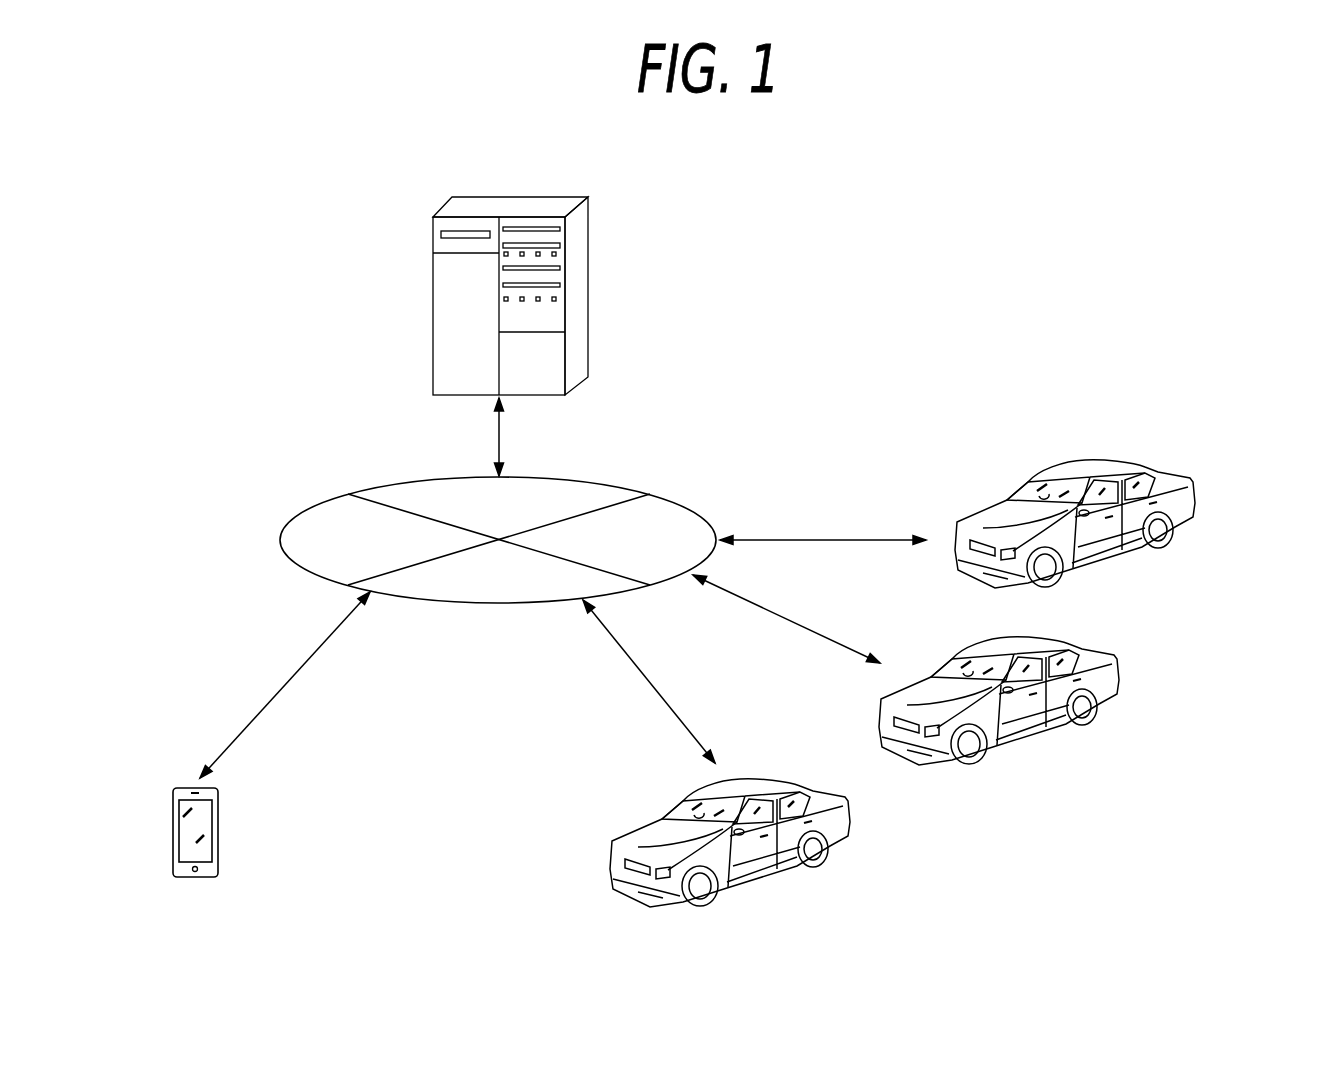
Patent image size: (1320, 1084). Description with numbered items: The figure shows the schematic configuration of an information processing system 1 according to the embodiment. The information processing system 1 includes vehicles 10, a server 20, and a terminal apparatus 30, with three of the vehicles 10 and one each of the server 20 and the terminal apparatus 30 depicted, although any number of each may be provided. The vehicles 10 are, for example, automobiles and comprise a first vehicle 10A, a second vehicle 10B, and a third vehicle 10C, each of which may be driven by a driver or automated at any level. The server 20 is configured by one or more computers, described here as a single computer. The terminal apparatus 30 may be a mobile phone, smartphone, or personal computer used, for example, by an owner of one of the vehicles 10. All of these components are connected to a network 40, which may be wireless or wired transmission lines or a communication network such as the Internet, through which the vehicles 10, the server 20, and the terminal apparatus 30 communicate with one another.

The information processing system 1 is at (296, 247).
The vehicles 10 is at (923, 638).
The first vehicle 10A is at (853, 838).
The second vehicle 10B is at (1120, 698).
The third vehicle 10C is at (1078, 458).
The server 20 is at (507, 197).
The terminal apparatus 30 is at (195, 878).
The network 40 is at (680, 500).